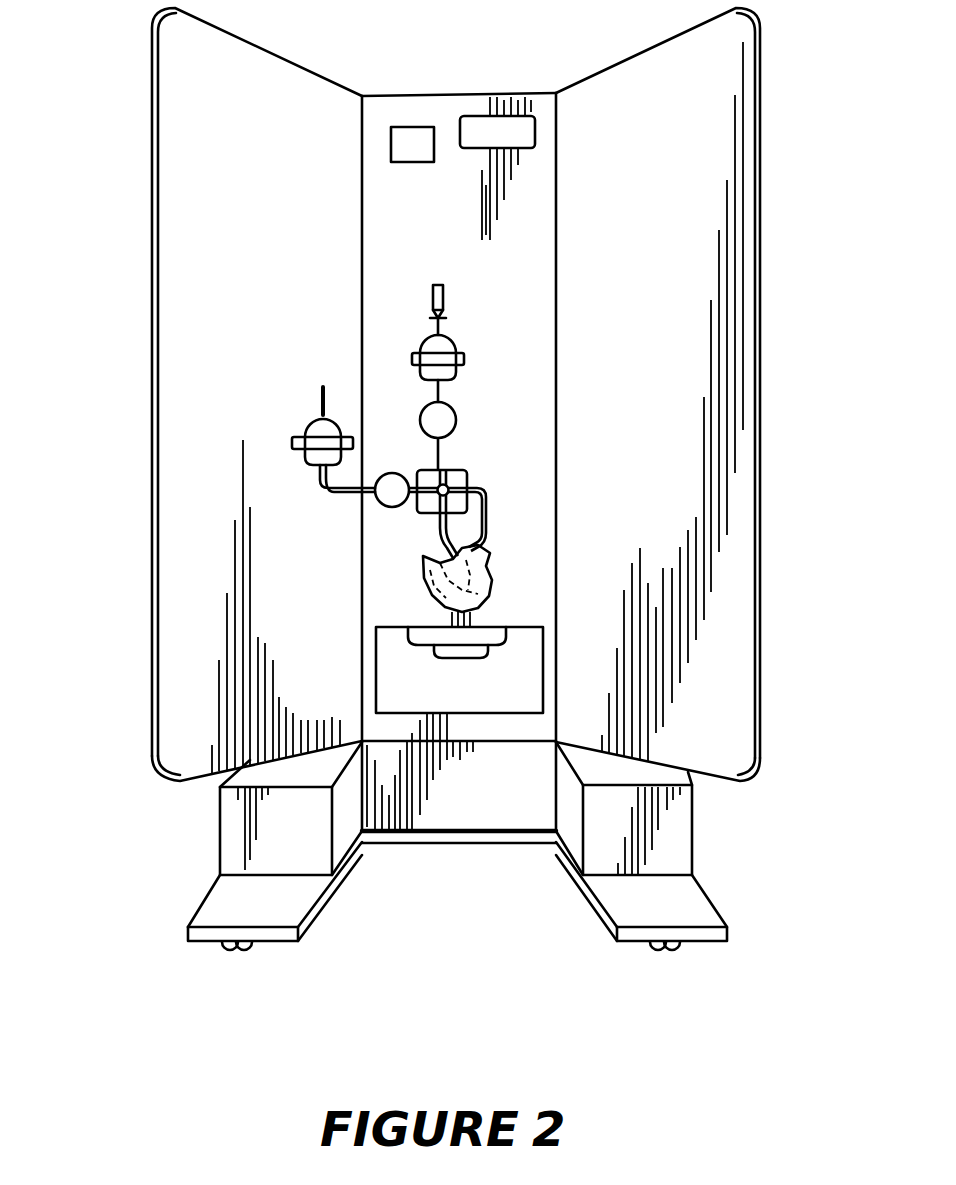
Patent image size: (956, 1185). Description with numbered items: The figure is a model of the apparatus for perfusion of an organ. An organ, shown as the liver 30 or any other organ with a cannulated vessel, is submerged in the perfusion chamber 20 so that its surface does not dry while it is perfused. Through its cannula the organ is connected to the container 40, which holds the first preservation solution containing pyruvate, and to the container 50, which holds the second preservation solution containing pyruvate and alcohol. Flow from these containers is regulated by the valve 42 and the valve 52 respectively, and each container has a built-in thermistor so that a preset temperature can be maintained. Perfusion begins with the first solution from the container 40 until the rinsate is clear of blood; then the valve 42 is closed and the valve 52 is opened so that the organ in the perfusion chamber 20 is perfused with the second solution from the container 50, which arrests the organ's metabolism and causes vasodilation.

The perfusion chamber 20 is at (480, 476).
The liver 30 is at (493, 546).
The container 40 is at (285, 459).
The valve 42 is at (380, 509).
The container 50 is at (472, 363).
The valve 52 is at (475, 422).